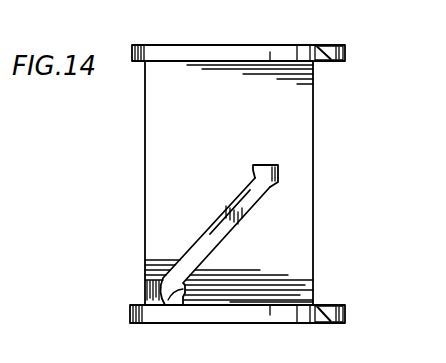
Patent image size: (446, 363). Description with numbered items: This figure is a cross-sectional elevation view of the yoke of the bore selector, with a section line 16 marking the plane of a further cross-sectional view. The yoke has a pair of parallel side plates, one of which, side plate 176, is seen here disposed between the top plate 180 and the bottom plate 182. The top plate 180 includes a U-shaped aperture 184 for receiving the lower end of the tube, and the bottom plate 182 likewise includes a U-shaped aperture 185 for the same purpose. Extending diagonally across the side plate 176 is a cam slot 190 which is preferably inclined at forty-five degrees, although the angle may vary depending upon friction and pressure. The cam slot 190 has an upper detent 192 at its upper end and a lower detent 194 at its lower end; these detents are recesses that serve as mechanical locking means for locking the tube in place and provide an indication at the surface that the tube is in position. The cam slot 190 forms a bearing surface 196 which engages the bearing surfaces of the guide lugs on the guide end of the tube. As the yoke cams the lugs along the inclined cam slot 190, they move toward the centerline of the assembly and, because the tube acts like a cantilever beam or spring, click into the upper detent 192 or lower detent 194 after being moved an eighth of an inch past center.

The section line 16 is at (92, 173).
The side plate 176 is at (307, 270).
The top plate 180 is at (345, 52).
The bottom plate 182 is at (347, 315).
The U-shaped aperture 184 is at (227, 52).
The U-shaped aperture 185 is at (227, 315).
The cam slot 190 is at (219, 244).
The upper detent 192 is at (283, 162).
The lower detent 194 is at (181, 301).
The bearing surface 196 is at (240, 222).